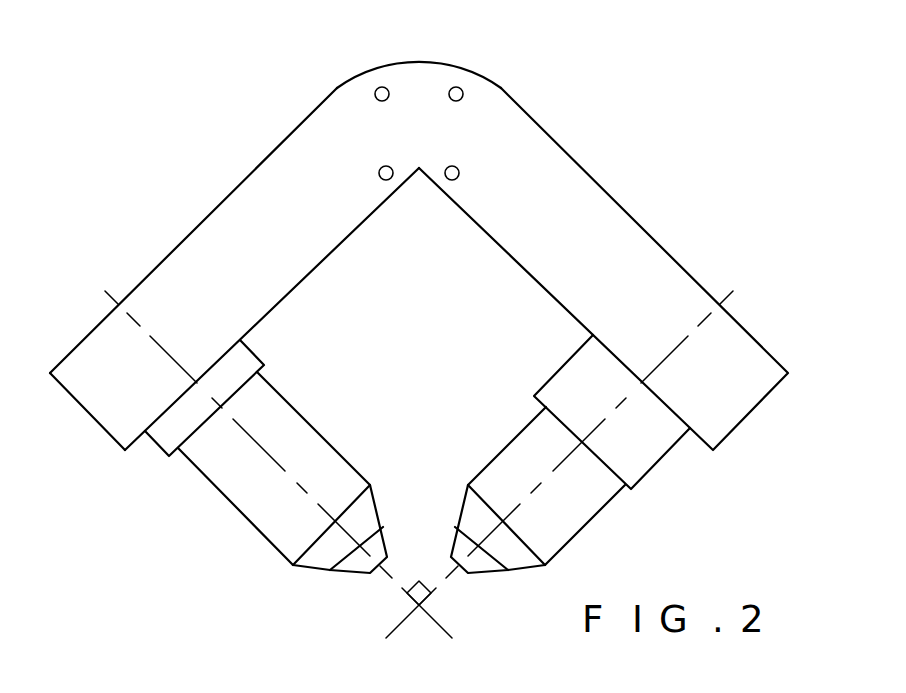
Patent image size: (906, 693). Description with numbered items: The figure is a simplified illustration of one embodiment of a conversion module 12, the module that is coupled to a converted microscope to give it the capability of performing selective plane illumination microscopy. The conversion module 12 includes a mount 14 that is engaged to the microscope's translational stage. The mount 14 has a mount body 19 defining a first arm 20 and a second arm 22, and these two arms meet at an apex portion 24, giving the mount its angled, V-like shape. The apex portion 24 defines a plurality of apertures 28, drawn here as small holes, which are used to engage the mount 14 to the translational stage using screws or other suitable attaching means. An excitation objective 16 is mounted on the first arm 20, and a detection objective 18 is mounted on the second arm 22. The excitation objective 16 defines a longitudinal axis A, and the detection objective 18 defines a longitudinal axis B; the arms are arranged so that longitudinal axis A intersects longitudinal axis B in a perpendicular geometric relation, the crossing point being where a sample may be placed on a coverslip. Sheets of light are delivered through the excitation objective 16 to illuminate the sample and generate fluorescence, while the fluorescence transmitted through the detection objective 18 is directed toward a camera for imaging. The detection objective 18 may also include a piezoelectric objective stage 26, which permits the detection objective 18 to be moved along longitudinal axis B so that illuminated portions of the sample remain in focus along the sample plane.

The conversion module 12 is at (605, 105).
The mount 14 is at (651, 238).
The excitation objective 16 is at (240, 518).
The detection objective 18 is at (577, 533).
The mount body 19 is at (152, 270).
The first arm 20 is at (223, 204).
The second arm 22 is at (607, 192).
The apex portion 24 is at (419, 62).
The piezoelectric objective stage 26 is at (640, 448).
The apertures 28 is at (376, 87).
The longitudinal axis of the excitation objective A is at (268, 448).
The longitudinal axis of the detection objective B is at (550, 470).